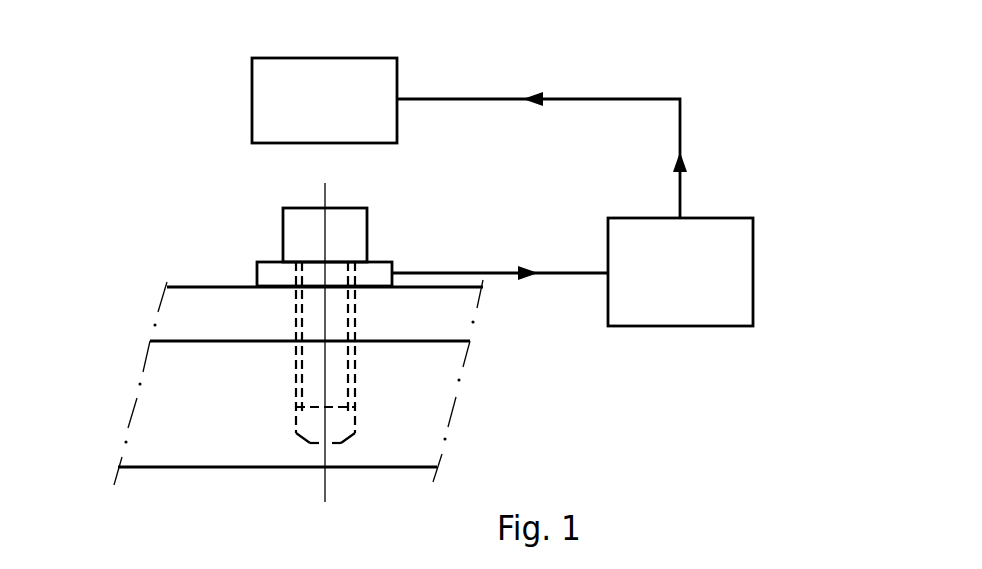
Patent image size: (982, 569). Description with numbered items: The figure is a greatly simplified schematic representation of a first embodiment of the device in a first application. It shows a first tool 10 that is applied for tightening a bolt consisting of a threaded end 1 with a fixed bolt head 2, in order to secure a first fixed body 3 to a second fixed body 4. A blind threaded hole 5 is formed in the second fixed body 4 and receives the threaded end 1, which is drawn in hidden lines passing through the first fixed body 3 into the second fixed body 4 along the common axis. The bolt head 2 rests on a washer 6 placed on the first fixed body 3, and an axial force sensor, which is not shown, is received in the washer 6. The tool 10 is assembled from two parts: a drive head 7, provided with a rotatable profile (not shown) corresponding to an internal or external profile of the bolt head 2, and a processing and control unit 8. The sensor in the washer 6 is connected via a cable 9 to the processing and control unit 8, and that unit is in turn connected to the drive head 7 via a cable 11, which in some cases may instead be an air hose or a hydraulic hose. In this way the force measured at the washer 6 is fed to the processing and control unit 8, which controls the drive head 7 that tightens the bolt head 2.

The threaded end 1 is at (323, 377).
The bolt head 2 is at (297, 233).
The first fixed body 3 is at (187, 317).
The second fixed body 4 is at (163, 432).
The blind threaded hole 5 is at (310, 440).
The washer 6 is at (270, 273).
The drive head 7 is at (272, 95).
The processing and control unit 8 is at (728, 272).
The cable 9 is at (500, 277).
The first tool 10 is at (626, 356).
The cable 11 is at (610, 98).